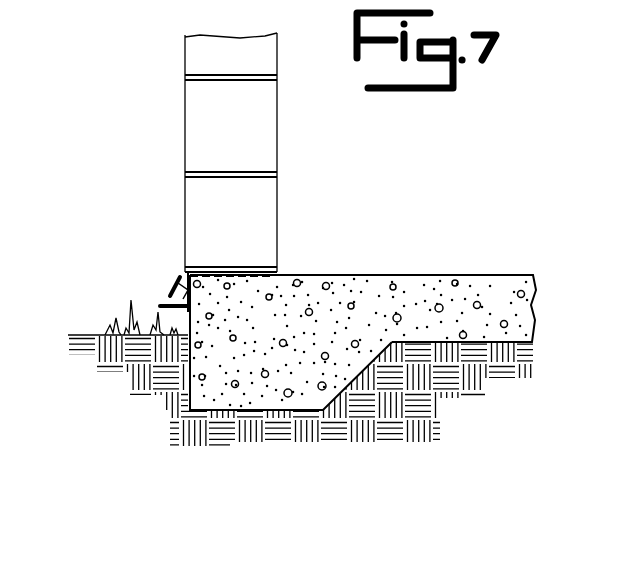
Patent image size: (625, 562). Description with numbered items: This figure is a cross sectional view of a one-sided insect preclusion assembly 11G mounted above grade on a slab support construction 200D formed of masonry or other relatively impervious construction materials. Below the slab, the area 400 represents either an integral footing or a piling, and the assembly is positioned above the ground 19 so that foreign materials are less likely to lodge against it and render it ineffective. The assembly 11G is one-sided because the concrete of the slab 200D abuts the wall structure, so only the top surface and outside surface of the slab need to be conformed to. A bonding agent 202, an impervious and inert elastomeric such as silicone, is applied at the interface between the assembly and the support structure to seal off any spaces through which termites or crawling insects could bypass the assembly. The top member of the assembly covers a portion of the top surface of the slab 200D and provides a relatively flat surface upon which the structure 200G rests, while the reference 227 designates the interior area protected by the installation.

The foundation assembly 227 is at (452, 167).
The structure 200G is at (255, 137).
The bonding agent 202 is at (200, 273).
The one-sided preclusion assembly 11G is at (188, 274).
The ground 19 is at (110, 335).
The slab support construction 200D is at (340, 284).
The footing or piling 400 is at (210, 390).